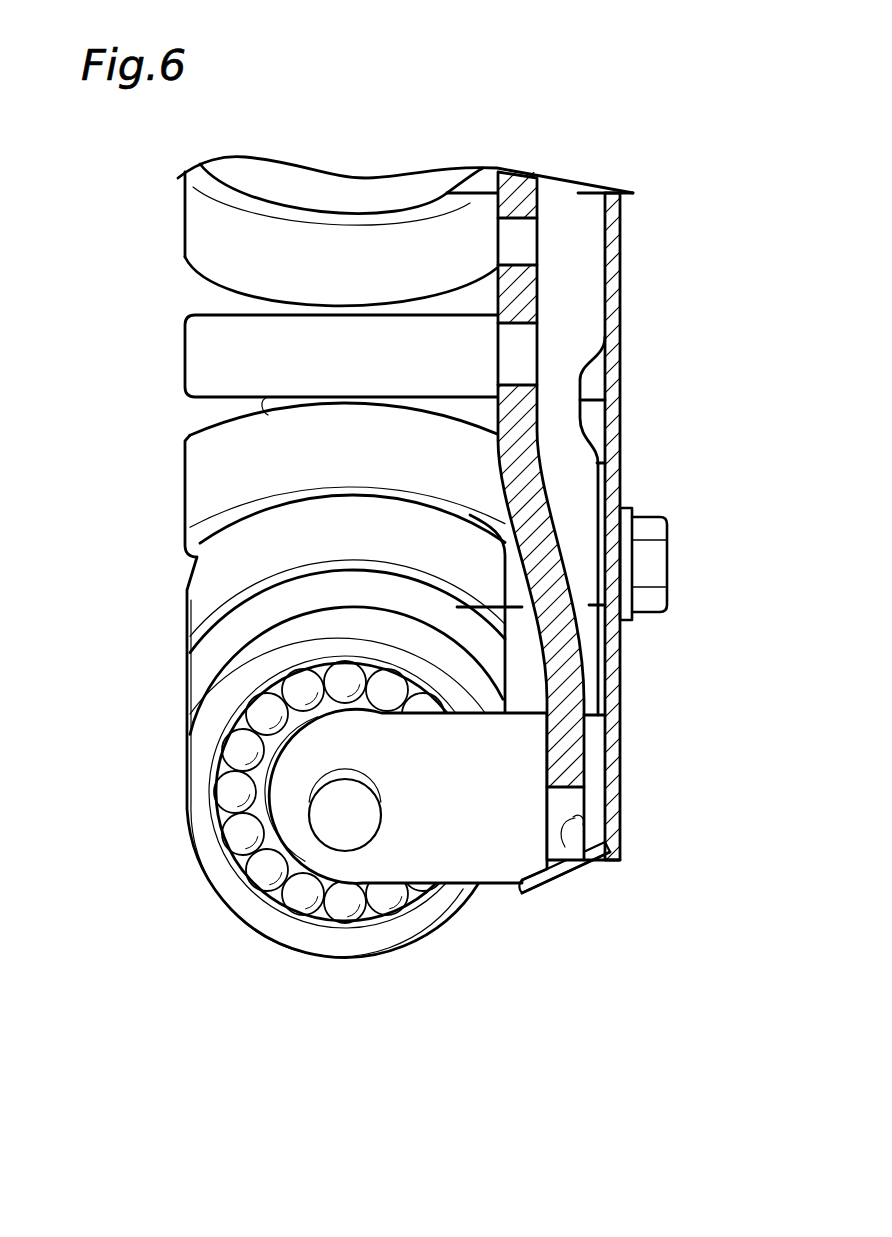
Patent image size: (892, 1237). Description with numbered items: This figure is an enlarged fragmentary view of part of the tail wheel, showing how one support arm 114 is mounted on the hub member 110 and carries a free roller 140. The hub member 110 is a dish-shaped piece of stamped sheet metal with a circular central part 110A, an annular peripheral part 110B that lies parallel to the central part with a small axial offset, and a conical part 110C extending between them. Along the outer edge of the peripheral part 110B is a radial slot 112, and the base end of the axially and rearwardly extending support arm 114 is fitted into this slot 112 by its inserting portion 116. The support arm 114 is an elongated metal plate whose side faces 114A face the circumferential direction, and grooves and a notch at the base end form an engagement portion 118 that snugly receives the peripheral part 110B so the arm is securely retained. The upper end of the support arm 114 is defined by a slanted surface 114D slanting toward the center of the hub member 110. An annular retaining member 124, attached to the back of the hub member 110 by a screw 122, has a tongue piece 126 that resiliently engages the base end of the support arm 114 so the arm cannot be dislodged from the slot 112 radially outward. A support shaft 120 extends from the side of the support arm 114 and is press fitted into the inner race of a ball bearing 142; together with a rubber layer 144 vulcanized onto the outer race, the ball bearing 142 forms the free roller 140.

The hub member 110 is at (530, 416).
The central part 110A is at (535, 298).
The peripheral part 110B is at (583, 733).
The conical part 110C is at (548, 562).
The radial slot 112 is at (586, 800).
The support arm 114 is at (455, 875).
The side face 114A is at (385, 845).
The slanted surface 114D is at (540, 872).
The inserting portion 116 is at (564, 855).
The engagement portion 118 is at (560, 855).
The support shaft 120 is at (333, 828).
The screw 122 is at (655, 562).
The annular retaining member 124 is at (607, 332).
The tongue piece 126 is at (608, 866).
The free roller 140 is at (212, 455).
The ball bearing 142 is at (235, 822).
The rubber layer 144 is at (235, 903).